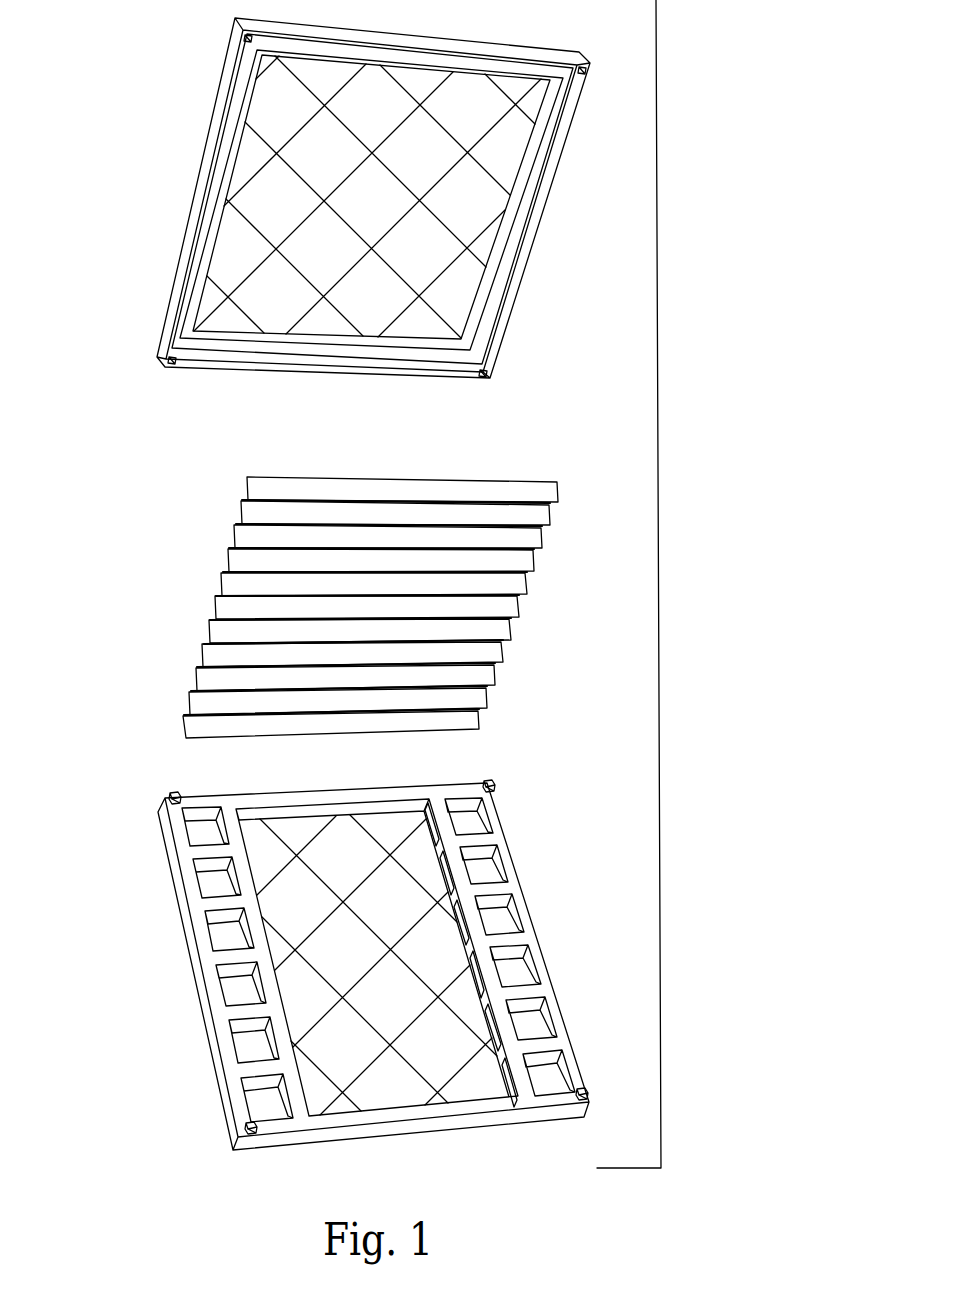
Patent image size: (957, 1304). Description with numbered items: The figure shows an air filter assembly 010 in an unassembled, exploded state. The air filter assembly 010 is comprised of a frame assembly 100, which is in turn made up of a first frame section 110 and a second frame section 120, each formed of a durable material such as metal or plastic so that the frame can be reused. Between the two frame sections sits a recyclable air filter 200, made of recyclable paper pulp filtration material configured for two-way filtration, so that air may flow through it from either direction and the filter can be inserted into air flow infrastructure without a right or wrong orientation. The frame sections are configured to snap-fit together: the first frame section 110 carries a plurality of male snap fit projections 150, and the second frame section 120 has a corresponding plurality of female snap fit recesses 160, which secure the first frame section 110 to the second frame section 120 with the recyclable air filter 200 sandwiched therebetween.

The air filter assembly 010 is at (690, 496).
The frame assembly 100 is at (310, 584).
The first frame section 110 is at (367, 959).
The second frame section 120 is at (373, 201).
The male snap fit projection 150 is at (497, 784).
The female snap fit recess 160 is at (490, 371).
The recyclable air filter 200 is at (189, 577).